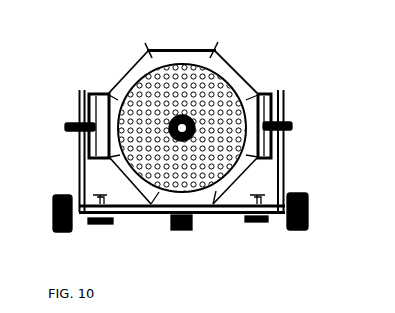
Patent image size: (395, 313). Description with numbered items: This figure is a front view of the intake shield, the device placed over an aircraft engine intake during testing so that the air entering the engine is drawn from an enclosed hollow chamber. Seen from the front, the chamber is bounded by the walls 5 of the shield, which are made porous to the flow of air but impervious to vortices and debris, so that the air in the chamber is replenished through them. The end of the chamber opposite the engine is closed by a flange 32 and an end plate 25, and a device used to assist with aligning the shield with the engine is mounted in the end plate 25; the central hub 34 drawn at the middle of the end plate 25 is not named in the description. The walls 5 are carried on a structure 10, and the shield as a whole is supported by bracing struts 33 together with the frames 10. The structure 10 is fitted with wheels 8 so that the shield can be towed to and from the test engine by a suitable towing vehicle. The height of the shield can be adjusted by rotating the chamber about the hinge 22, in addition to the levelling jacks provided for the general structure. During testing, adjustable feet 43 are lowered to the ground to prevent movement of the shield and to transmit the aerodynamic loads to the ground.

The walls 5 is at (181, 49).
The flange 32 is at (140, 67).
The bracing struts 33 is at (218, 57).
The end plate 25 is at (117, 98).
The drum axle 34 is at (172, 130).
The hinge 22 is at (293, 126).
The structure 10 is at (50, 221).
The wheels 8 is at (175, 232).
The adjustable feet 43 is at (258, 223).